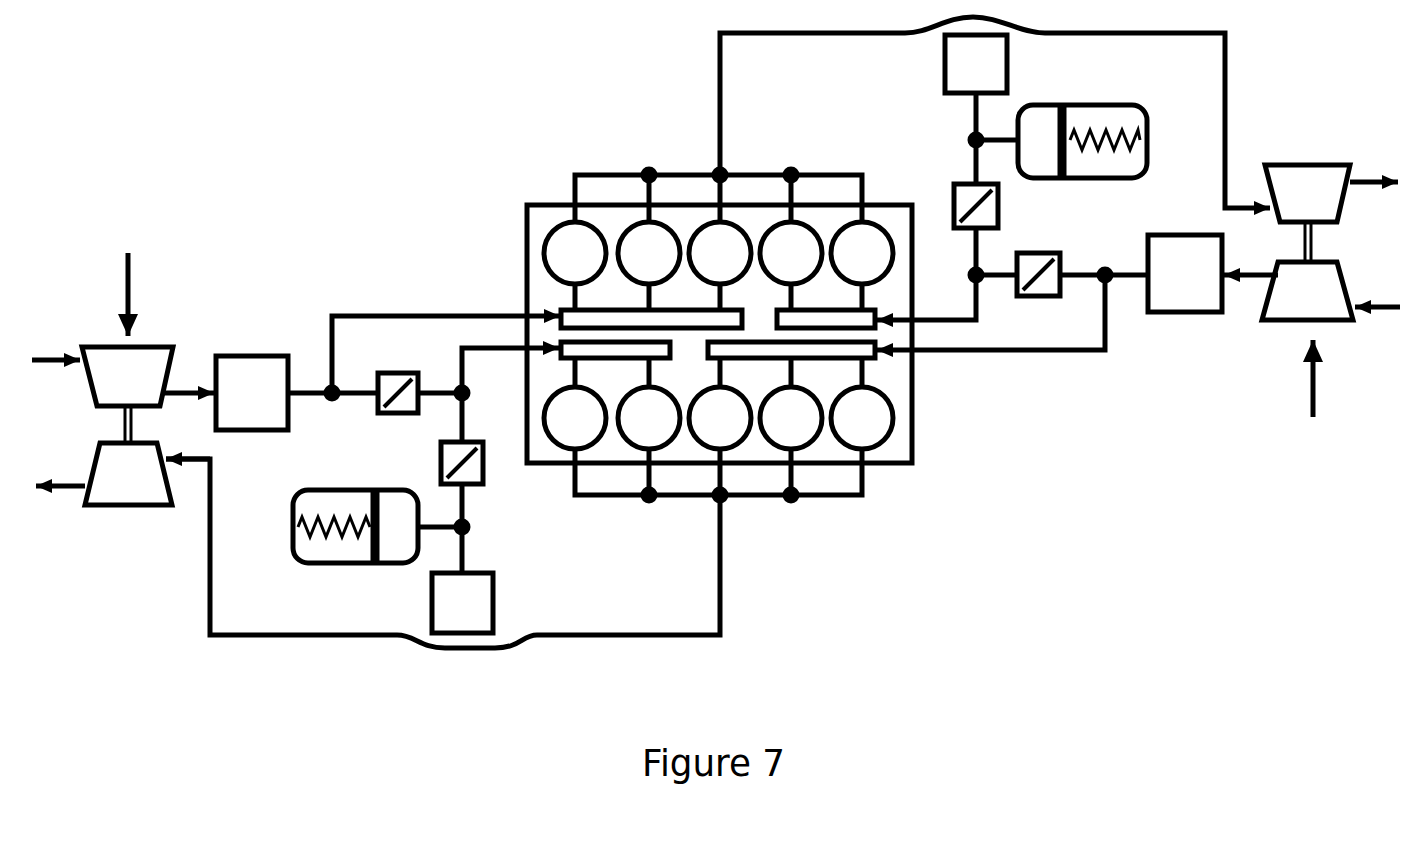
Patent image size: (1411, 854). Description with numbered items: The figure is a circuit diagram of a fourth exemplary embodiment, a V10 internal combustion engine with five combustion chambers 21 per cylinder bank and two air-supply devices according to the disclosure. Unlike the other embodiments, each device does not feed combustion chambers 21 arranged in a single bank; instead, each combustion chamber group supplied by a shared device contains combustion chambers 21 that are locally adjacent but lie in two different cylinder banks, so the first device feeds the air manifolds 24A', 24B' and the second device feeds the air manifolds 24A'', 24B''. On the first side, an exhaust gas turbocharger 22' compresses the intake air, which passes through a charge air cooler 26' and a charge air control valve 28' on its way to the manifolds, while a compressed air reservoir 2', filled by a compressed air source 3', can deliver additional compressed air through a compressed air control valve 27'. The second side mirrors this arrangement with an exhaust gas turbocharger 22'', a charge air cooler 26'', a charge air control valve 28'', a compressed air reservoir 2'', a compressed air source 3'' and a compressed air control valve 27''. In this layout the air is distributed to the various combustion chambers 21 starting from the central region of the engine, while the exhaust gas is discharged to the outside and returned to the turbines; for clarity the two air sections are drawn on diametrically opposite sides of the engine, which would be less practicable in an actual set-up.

The compressed air reservoir 2' is at (345, 554).
The compressed air reservoir 2'' is at (1104, 163).
The compressed air source 3' is at (462, 603).
The compressed air source 3'' is at (976, 64).
The combustion chamber 21 is at (718, 335).
The exhaust gas turbocharger 22' is at (112, 294).
The exhaust gas turbocharger 22'' is at (1332, 378).
The air manifold 24A' is at (651, 309).
The air manifold 24B' is at (615, 363).
The air manifold 24A'' is at (791, 363).
The air manifold 24B'' is at (826, 309).
The charge air cooler 26' is at (246, 359).
The charge air cooler 26'' is at (1176, 303).
The compressed air control valve 27' is at (416, 463).
The compressed air control valve 27'' is at (950, 179).
The charge air control valve 28' is at (384, 373).
The charge air control valve 28'' is at (1022, 300).